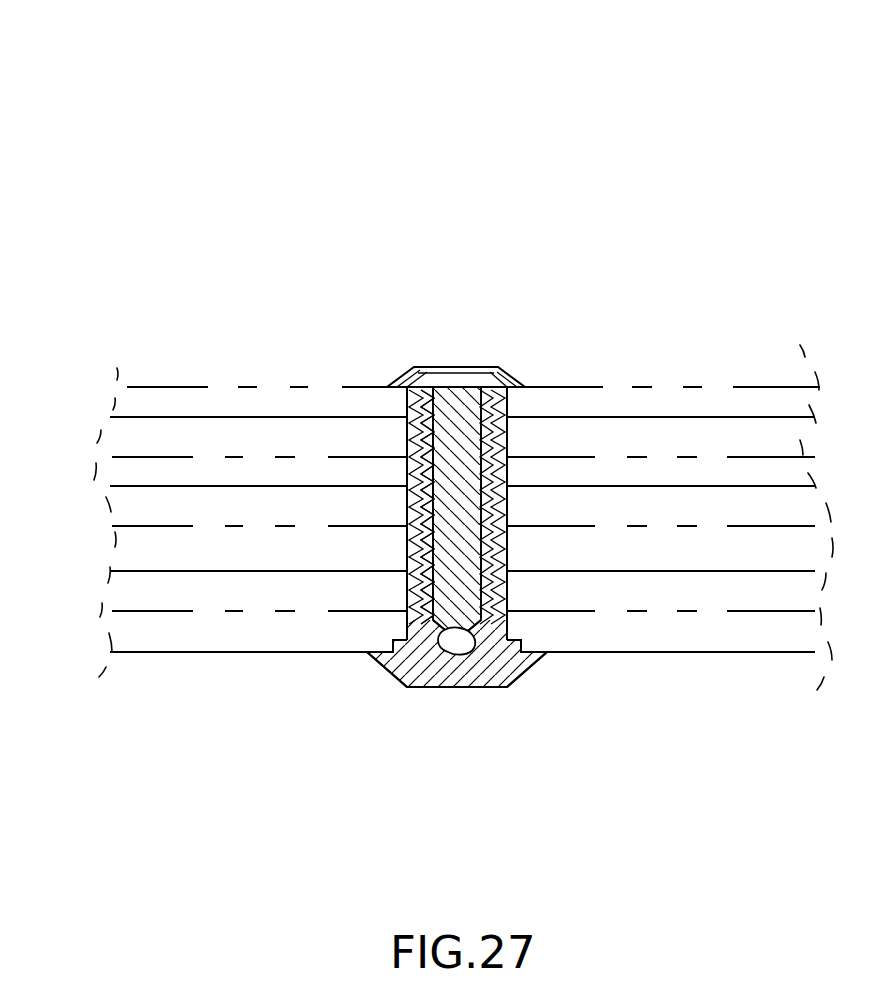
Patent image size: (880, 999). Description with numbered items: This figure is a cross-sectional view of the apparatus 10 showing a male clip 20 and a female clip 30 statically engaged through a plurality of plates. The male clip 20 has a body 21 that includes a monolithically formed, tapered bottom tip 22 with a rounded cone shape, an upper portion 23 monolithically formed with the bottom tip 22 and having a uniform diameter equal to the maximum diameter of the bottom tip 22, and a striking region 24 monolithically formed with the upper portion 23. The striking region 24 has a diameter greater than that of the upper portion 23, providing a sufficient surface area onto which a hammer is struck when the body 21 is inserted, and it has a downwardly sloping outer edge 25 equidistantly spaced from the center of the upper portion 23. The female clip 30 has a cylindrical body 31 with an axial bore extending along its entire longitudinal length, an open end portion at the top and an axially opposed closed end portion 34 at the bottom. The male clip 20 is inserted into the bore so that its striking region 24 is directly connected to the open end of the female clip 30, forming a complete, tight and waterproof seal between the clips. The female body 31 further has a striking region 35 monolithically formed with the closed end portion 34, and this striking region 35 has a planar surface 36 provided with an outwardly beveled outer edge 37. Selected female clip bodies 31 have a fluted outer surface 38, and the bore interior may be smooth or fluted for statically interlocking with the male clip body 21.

The apparatus 10 is at (622, 181).
The male clip 20 is at (504, 360).
The body 21 is at (445, 450).
The bottom tip 22 is at (457, 622).
The upper portion 23 is at (460, 424).
The striking region 24 is at (455, 368).
The downwardly sloping outer edge 25 is at (403, 386).
The female clip 30 is at (401, 694).
The cylindrical body 31 is at (505, 517).
The closed end portion 34 is at (466, 645).
The striking region 35 is at (511, 688).
The planar surface 36 is at (478, 690).
The outwardly beveled outer edge 37 is at (383, 680).
The fluted outer surface 38 is at (505, 432).